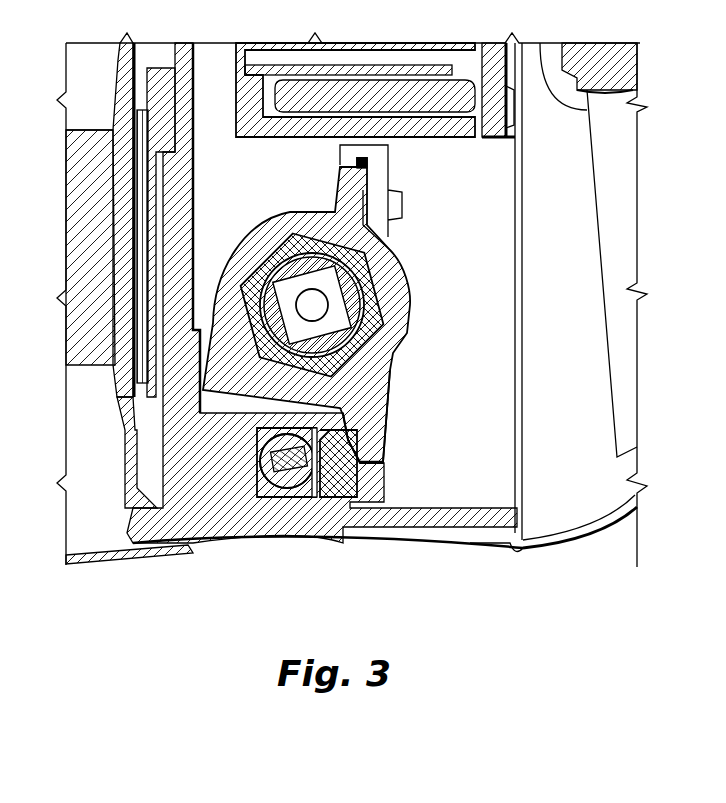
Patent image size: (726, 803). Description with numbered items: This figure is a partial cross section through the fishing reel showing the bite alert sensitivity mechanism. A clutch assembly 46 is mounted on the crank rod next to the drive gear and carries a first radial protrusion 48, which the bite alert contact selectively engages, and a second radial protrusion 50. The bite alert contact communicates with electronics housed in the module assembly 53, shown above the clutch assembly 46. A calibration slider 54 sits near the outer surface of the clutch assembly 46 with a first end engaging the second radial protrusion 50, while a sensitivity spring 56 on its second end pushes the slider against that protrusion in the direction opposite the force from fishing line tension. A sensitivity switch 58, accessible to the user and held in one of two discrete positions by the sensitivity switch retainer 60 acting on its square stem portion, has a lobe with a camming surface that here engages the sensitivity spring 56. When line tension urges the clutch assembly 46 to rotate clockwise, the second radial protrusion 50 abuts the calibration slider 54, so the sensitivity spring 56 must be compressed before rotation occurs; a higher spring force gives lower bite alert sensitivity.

The clutch assembly 46 is at (403, 275).
The first radial protrusion 48 is at (345, 187).
The second radial protrusion 50 is at (372, 448).
The module assembly 53 is at (397, 95).
The calibration slider 54 is at (345, 487).
The sensitivity spring 56 is at (316, 497).
The sensitivity switch 58 is at (287, 462).
The sensitivity switch retainer 60 is at (362, 464).